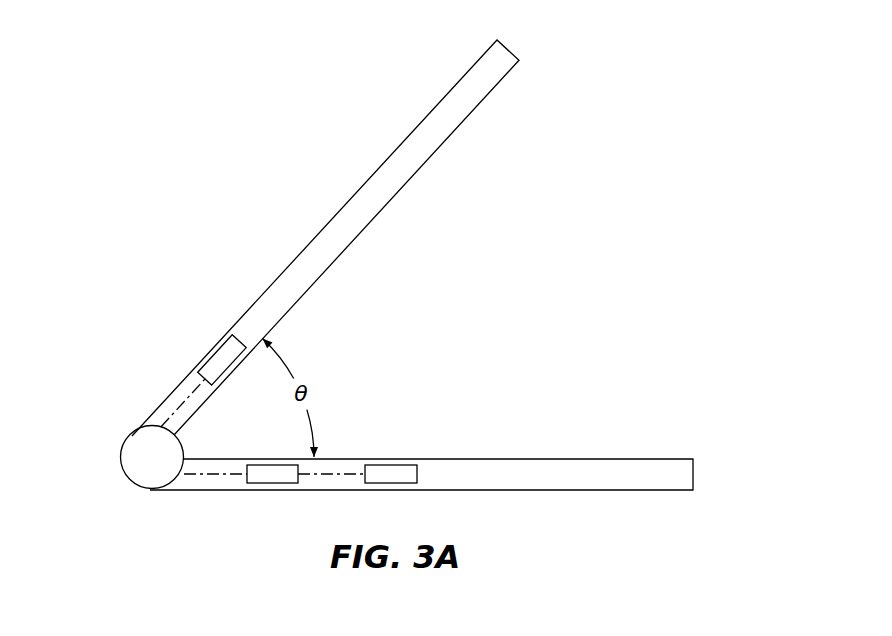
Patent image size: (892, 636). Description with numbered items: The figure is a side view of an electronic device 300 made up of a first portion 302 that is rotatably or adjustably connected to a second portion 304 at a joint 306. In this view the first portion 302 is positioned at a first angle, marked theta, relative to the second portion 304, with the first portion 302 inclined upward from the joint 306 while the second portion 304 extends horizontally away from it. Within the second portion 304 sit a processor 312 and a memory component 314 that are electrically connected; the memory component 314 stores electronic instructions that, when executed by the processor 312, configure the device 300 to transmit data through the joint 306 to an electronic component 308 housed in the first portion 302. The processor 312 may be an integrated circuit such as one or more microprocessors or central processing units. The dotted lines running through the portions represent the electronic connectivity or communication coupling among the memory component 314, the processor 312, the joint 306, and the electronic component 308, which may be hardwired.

The electronic device 300 is at (678, 170).
The first portion 302 is at (390, 168).
The second portion 304 is at (640, 470).
The joint 306 is at (143, 475).
The electronic component 308 is at (217, 353).
The processor 312 is at (270, 478).
The memory component 314 is at (390, 470).